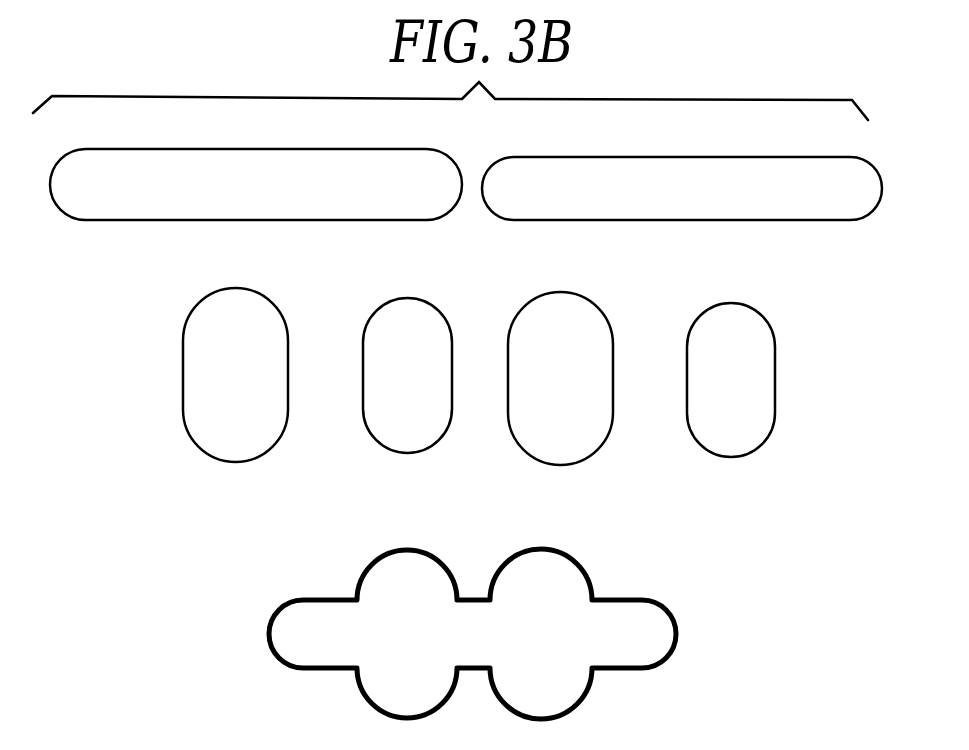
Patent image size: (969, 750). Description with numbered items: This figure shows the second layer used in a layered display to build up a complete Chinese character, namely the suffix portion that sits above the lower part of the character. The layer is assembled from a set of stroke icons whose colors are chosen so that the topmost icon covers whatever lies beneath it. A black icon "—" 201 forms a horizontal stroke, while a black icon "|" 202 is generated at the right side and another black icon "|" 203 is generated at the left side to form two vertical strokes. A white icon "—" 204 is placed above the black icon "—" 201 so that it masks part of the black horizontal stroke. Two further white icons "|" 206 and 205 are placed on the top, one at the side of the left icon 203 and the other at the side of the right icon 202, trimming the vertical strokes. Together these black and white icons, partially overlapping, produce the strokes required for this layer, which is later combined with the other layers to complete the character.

The black icon "—" 201 is at (280, 170).
The black icon "|" 202 is at (243, 305).
The black icon "|" 203 is at (557, 320).
The white icon "—" 204 is at (630, 170).
The white icon "|" 205 is at (405, 318).
The white icon "|" 206 is at (718, 322).